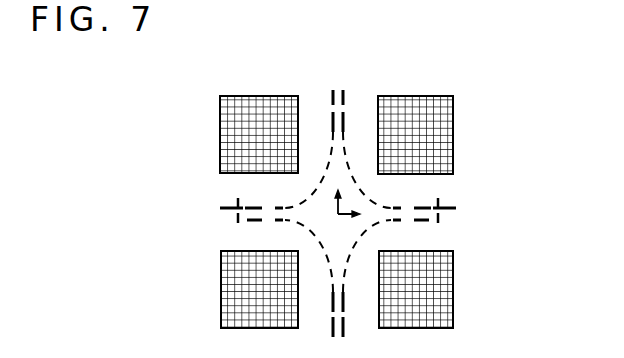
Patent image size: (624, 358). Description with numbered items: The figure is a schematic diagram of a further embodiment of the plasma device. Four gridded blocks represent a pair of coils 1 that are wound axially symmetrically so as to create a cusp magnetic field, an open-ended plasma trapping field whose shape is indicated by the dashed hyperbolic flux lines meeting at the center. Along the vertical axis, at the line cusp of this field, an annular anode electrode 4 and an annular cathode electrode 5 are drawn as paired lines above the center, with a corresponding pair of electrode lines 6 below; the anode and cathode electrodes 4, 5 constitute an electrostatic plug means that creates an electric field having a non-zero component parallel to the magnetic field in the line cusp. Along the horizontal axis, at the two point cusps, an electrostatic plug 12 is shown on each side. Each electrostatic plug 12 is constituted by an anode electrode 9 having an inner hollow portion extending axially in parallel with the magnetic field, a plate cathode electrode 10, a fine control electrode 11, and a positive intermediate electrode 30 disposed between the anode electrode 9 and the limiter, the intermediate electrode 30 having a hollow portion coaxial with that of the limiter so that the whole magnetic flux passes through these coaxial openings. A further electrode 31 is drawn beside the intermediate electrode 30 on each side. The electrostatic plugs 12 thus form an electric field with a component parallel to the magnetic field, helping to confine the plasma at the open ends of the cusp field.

The coil 1 is at (246, 96).
The annular anode electrode 4 is at (331, 120).
The annular cathode electrode 5 is at (331, 92).
The rod electrode 6 is at (344, 240).
The anode electrode 9 is at (248, 221).
The plate cathode electrode 10 is at (237, 219).
The fine control electrode 11 is at (237, 200).
The electrostatic plug 12 is at (128, 221).
The positive intermediate electrode 30 is at (278, 206).
The correction electrode 31 is at (278, 222).